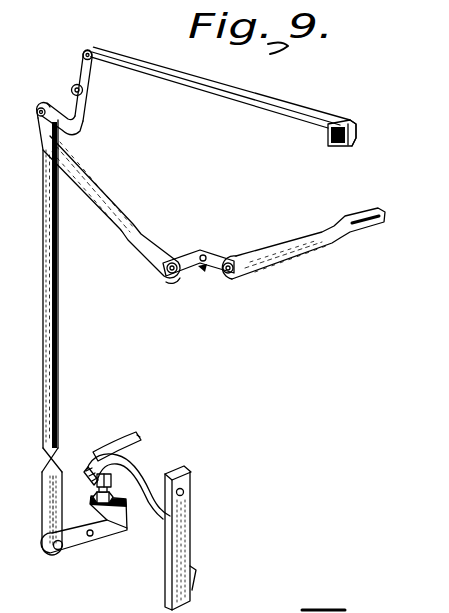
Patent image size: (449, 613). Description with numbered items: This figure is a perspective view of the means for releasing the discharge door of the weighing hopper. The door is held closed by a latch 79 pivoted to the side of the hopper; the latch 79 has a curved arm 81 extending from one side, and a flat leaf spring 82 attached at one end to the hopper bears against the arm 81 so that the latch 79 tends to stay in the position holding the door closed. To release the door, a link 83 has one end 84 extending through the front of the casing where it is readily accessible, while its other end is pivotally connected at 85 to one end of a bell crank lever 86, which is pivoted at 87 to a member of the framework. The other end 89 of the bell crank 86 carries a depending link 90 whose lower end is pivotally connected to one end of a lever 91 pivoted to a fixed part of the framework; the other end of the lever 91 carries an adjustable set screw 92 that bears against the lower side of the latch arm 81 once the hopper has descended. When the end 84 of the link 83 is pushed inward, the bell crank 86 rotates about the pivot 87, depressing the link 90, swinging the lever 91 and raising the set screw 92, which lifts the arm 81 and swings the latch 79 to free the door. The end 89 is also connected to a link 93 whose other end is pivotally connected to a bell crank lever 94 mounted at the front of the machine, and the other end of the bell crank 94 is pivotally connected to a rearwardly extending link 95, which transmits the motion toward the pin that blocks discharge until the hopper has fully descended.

The latch 79 is at (190, 533).
The curved arm 81 is at (141, 470).
The flat leaf spring 82 is at (141, 439).
The link 83 is at (252, 99).
The end of link 84 is at (341, 139).
The pivot 85 is at (96, 52).
The bell crank lever 86 is at (90, 78).
The pivot 87 is at (87, 97).
The end of bell crank 89 is at (67, 110).
The depending link 90 is at (57, 304).
The lever 91 is at (79, 541).
The adjustable set screw 92 is at (98, 487).
The link 93 is at (114, 212).
The bell crank lever 94 is at (199, 262).
The rearwardly extending link 95 is at (284, 256).